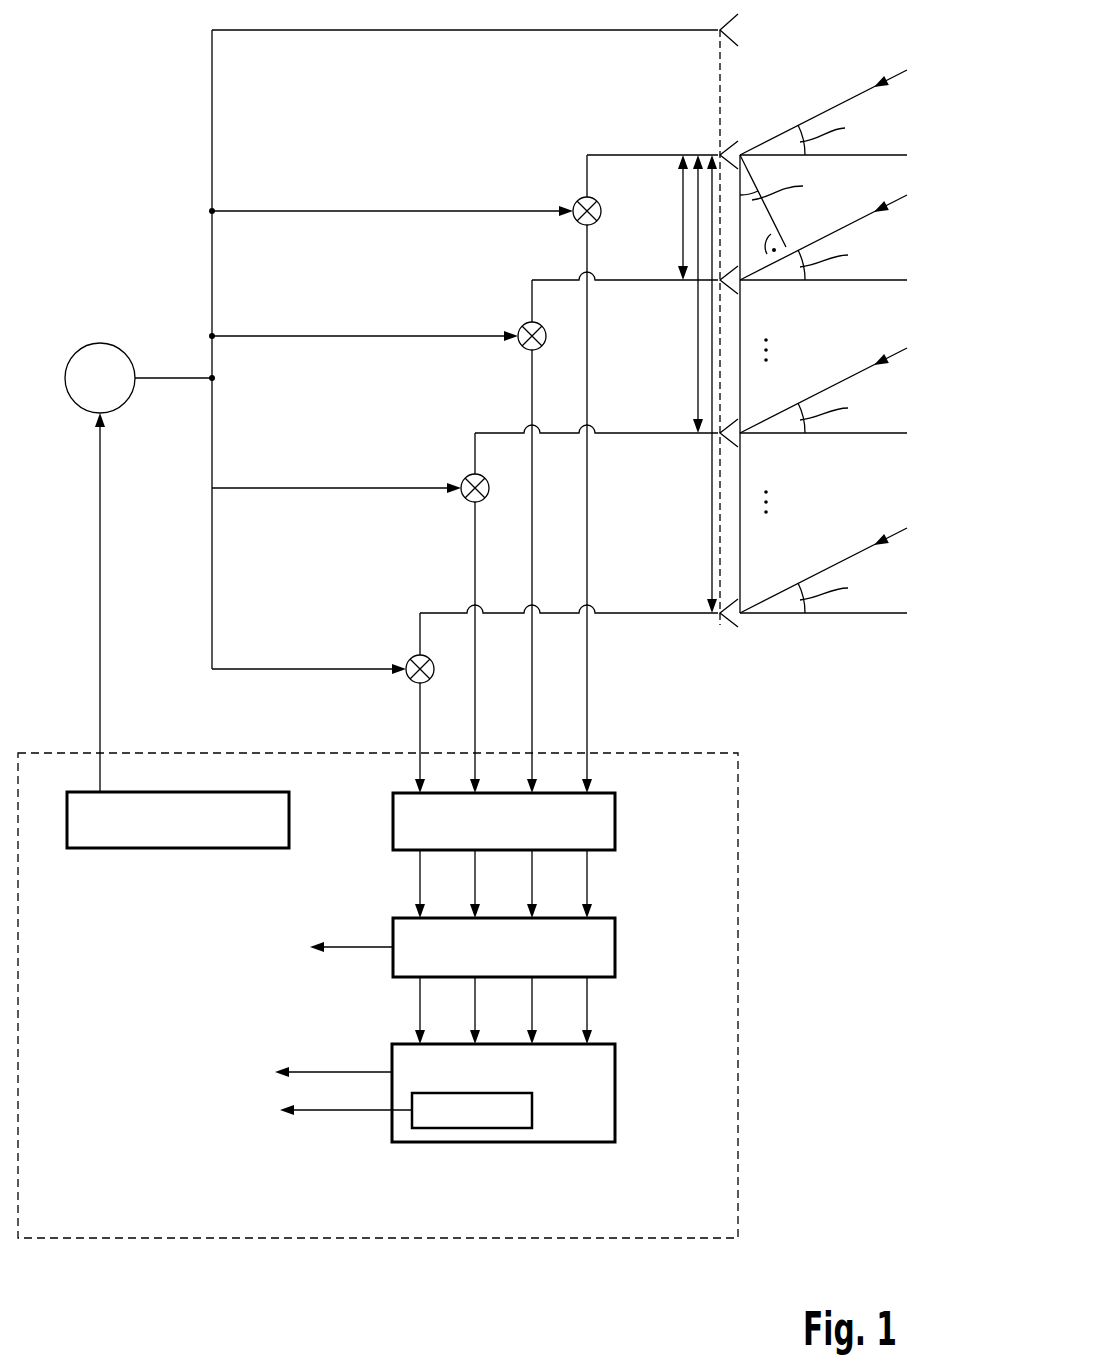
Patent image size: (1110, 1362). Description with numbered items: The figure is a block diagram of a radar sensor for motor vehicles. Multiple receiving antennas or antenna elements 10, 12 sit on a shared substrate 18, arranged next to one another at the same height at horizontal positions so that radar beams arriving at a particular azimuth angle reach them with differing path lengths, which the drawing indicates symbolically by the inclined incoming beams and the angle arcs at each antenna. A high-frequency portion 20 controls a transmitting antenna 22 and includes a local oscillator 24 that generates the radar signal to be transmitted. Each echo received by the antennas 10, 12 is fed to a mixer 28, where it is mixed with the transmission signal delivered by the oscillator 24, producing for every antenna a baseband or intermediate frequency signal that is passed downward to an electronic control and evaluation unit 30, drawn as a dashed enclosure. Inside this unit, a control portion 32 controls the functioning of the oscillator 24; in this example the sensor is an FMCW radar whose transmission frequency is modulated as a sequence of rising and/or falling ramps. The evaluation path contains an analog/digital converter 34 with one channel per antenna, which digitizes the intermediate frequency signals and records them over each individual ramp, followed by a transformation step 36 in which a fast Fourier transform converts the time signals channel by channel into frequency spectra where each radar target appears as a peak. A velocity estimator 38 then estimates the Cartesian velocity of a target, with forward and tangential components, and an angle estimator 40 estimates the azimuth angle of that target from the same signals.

The receiving antenna 10 is at (724, 150).
The receiving antenna 12 is at (742, 284).
The shared substrate 18 is at (723, 72).
The high-frequency portion 20 is at (118, 183).
The transmitting antenna 22 is at (716, 24).
The local oscillator 24 is at (100, 342).
The mixer 28 is at (574, 200).
The control and evaluation unit 30 is at (740, 855).
The control portion 32 is at (210, 850).
The analog/digital converter 34 is at (616, 820).
The transformation step 36 is at (616, 945).
The velocity estimator 38 is at (616, 1070).
The angle estimator 40 is at (460, 1130).